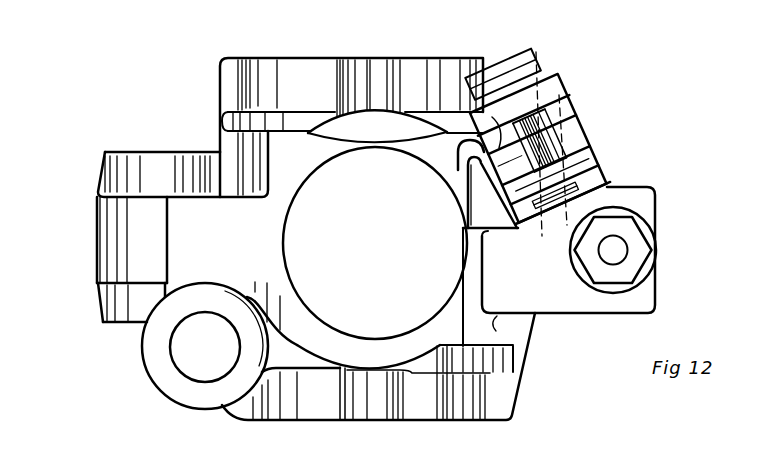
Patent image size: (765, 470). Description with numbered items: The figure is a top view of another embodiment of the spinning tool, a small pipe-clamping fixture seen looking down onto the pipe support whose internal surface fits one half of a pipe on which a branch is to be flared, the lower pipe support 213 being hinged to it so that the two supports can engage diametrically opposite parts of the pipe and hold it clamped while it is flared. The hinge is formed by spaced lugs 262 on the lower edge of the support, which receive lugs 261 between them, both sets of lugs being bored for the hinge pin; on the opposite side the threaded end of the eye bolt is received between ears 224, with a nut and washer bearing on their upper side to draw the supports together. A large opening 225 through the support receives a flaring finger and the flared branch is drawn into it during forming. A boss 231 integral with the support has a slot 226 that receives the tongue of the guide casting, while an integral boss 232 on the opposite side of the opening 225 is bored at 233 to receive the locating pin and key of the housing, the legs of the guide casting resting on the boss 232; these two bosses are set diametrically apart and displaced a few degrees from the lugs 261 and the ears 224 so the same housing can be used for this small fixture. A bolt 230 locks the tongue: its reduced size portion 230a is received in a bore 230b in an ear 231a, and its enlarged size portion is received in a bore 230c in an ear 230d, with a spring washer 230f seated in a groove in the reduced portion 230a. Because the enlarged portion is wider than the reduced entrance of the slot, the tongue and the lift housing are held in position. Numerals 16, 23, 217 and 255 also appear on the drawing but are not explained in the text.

The housing body 16 is at (515, 395).
The clamp assembly 23 is at (533, 72).
The lower pipe support 213 is at (508, 421).
The shoulder step 217 is at (97, 278).
The ears 224 is at (643, 187).
The opening 225 is at (285, 230).
The slot 226 is at (563, 133).
The bolt 230 is at (507, 53).
The reduced size portion 230a is at (560, 101).
The bore 230b is at (577, 140).
The bore 230c is at (528, 168).
The ear 230d is at (560, 77).
The spring washer 230f is at (535, 210).
The boss 231 is at (607, 184).
The ear 231a is at (580, 162).
The boss 232 is at (153, 377).
The bore 233 is at (192, 379).
The bore lens surfaces 255 is at (368, 137).
The lugs 261 is at (100, 233).
The spaced lugs 262 is at (115, 326).